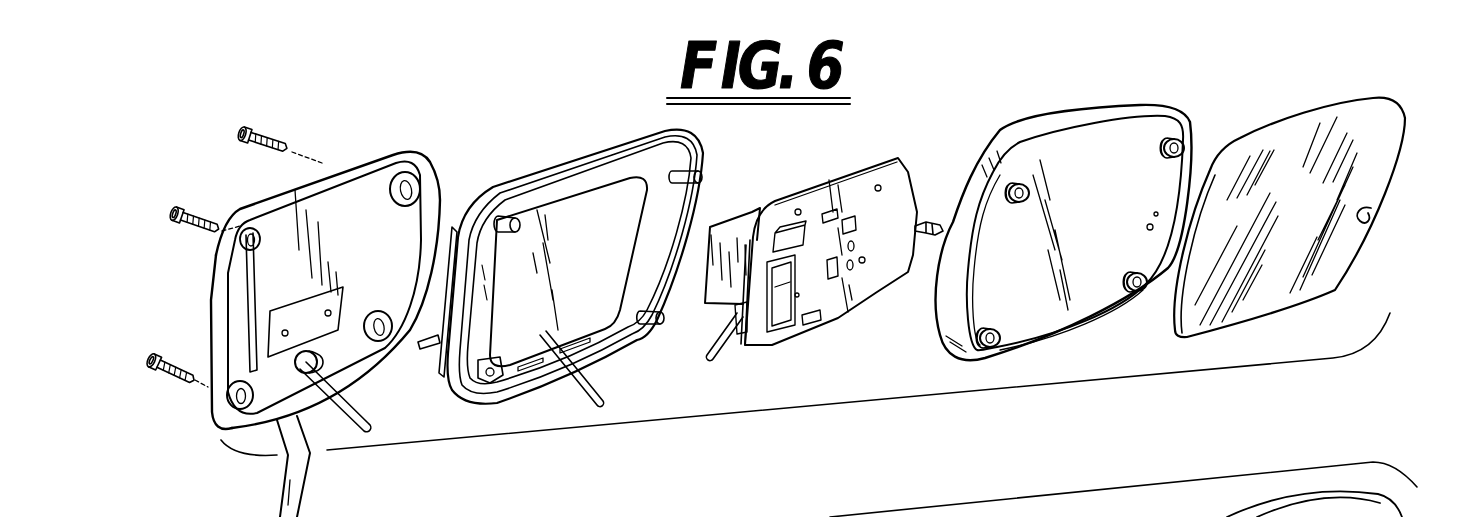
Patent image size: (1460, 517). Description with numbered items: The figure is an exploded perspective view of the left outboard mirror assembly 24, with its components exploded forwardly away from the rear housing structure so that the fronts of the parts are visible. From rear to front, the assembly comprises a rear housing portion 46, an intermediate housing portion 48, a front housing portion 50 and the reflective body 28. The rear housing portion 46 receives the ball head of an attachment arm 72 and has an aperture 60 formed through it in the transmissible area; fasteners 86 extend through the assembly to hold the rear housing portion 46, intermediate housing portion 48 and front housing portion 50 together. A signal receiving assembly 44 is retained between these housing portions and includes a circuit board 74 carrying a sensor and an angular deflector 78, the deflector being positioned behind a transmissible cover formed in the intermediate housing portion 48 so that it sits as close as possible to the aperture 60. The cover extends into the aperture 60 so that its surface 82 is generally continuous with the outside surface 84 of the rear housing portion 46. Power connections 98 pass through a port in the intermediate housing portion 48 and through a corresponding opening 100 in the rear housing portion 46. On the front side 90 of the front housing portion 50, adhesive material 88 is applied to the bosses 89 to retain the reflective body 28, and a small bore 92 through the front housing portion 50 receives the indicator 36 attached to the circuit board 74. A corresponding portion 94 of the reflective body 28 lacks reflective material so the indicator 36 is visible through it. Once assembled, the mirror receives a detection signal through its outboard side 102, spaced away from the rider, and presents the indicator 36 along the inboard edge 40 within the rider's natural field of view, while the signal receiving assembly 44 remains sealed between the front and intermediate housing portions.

The left outboard mirror assembly 24 is at (355, 131).
The reflective body 28 is at (1402, 172).
The indicator 36 is at (930, 223).
The inboard edge 40 is at (436, 178).
The signal receiving assembly 44 is at (813, 177).
The rear housing portion 46 is at (285, 177).
The intermediate housing portion 48 is at (572, 145).
The front housing portion 50 is at (1054, 116).
The aperture 60 is at (250, 302).
The attachment arm 72 is at (303, 497).
The circuit board 74 is at (763, 202).
The angular deflector 78 is at (737, 217).
The surface of the transmissible cover 82 is at (453, 233).
The outside surface 84 is at (1253, 516).
The fasteners 86 is at (195, 232).
The adhesive material 88 is at (1033, 193).
The bosses 89 is at (1160, 138).
The front side 90 is at (1083, 297).
The small bore 92 is at (1150, 226).
The corresponding portion 94 is at (1369, 218).
The power connections 98 is at (360, 423).
The opening 100 is at (313, 369).
The outboard side 102 is at (220, 313).